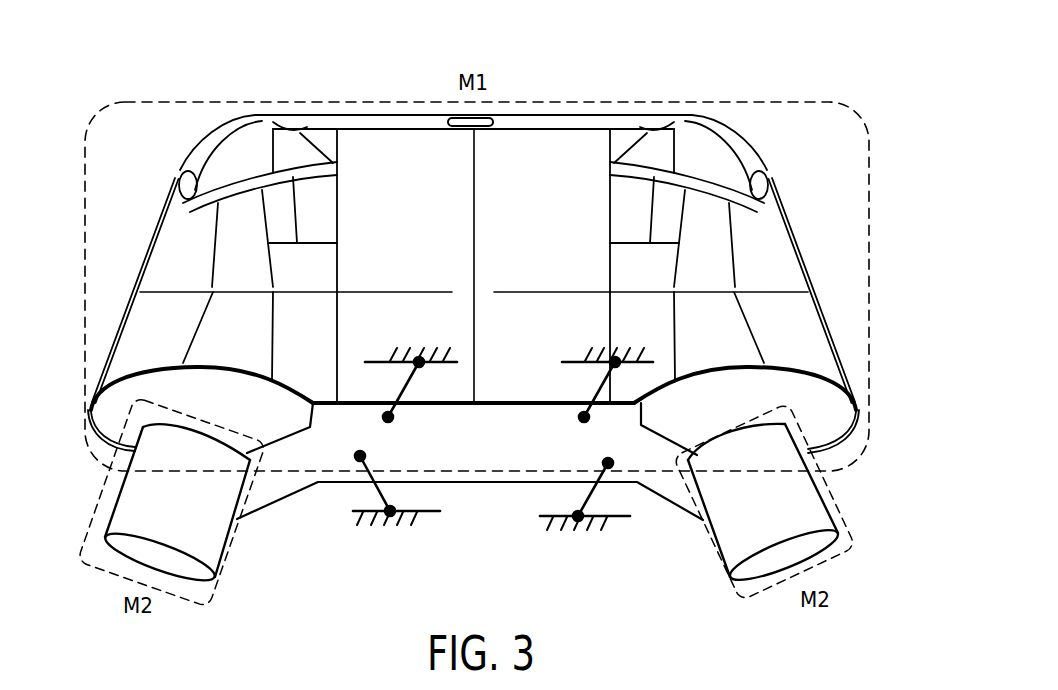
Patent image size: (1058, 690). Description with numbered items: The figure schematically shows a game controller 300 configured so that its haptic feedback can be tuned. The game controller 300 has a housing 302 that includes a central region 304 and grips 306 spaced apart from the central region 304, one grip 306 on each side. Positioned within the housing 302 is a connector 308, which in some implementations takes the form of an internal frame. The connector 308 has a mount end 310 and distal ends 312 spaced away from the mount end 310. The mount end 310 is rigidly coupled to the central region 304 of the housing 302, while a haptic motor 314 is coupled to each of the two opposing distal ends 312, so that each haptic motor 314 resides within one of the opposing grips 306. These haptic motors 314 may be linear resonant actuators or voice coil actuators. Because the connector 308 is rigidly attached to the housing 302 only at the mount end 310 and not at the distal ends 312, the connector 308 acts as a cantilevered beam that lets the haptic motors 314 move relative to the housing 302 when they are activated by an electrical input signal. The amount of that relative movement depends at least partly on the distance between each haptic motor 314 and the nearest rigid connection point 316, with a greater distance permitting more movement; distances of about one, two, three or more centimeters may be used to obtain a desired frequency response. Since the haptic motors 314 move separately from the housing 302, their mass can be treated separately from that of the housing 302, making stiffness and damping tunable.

The game controller 300 is at (770, 55).
The housing 302 is at (490, 194).
The central region 304 is at (490, 302).
The grip 306 is at (161, 360).
The connector 308 is at (492, 442).
The mount end 310 is at (487, 476).
The distal end 312 is at (234, 521).
The haptic motor 314 is at (130, 562).
The rigid connection point 316 is at (382, 530).